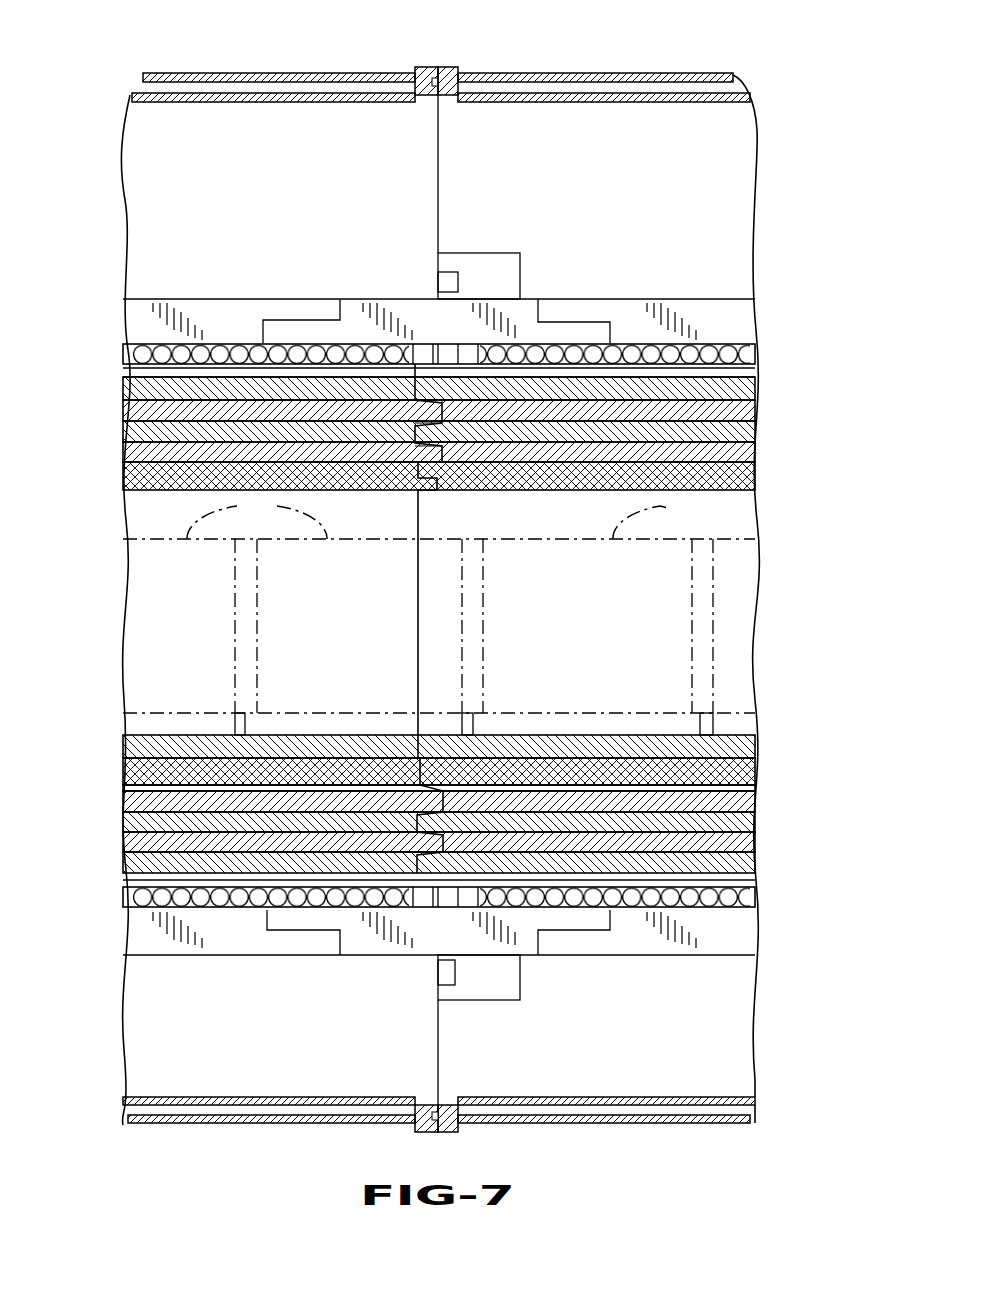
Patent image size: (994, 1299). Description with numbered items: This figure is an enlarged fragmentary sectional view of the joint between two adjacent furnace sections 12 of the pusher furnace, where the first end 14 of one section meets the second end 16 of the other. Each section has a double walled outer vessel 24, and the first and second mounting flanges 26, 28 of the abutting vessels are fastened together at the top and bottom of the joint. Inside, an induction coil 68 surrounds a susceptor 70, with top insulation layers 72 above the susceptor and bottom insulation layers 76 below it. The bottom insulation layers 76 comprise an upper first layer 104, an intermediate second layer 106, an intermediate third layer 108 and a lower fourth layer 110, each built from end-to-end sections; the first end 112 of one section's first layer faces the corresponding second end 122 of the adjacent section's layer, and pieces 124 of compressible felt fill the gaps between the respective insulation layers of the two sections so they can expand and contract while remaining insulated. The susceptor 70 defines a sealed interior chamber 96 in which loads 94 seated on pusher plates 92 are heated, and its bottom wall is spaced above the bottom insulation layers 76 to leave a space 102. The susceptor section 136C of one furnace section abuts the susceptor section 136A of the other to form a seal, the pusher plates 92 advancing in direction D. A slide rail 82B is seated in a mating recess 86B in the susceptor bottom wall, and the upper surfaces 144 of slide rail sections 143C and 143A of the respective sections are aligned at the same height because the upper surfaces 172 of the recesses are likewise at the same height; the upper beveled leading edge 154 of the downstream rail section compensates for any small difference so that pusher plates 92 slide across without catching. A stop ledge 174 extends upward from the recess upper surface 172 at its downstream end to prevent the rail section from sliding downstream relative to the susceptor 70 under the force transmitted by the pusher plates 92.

The furnace section 12 is at (288, 65).
The double walled outer vessel 24 is at (200, 73).
The second mounting flange 28 is at (427, 66).
The first mounting flange 26 is at (452, 66).
The first end of first section 112 is at (416, 392).
The second end of third section 122 is at (440, 397).
The induction coil 68 is at (243, 345).
The top insulation layers 72 is at (762, 400).
The susceptor 70 is at (757, 470).
The piece of felt 124 is at (415, 404).
The sealed interior chamber 96 is at (731, 516).
The load 94 is at (445, 516).
The pusher plate 92 is at (170, 713).
The slide rail section 143C is at (306, 736).
The slide rail section 143A is at (594, 736).
The upper beveled leading edge 154 is at (420, 738).
The upper surface 144 is at (204, 738).
The susceptor section 136C is at (172, 492).
The susceptor section 136A is at (553, 492).
The direction of movement D is at (668, 612).
The stop ledge 174 is at (376, 737).
The slide rail 82B is at (748, 748).
The mating recess 86B is at (156, 762).
The space 102 is at (148, 788).
The upper surface of recess 172 is at (182, 768).
The upper first layer 104 is at (242, 812).
The intermediate second layer 106 is at (278, 832).
The intermediate third layer 108 is at (306, 852).
The lower fourth layer 110 is at (183, 872).
The bottom insulation layers 76 is at (767, 845).
The second end 16 is at (440, 1062).
The first end 14 is at (438, 1040).